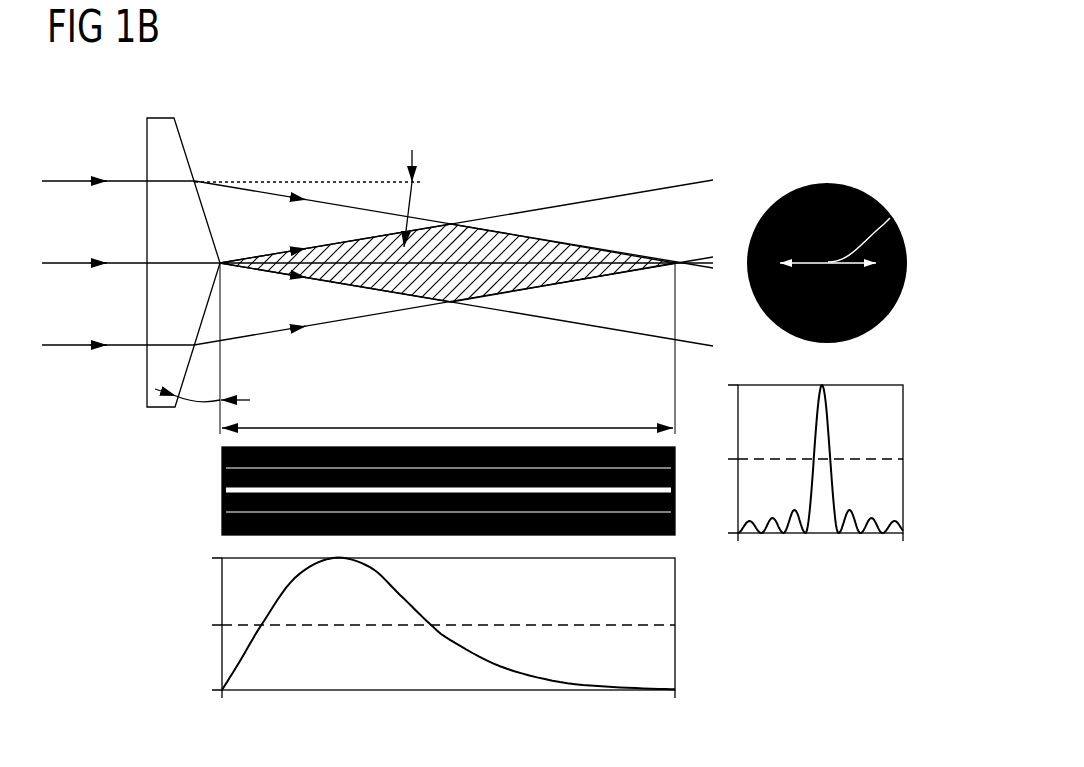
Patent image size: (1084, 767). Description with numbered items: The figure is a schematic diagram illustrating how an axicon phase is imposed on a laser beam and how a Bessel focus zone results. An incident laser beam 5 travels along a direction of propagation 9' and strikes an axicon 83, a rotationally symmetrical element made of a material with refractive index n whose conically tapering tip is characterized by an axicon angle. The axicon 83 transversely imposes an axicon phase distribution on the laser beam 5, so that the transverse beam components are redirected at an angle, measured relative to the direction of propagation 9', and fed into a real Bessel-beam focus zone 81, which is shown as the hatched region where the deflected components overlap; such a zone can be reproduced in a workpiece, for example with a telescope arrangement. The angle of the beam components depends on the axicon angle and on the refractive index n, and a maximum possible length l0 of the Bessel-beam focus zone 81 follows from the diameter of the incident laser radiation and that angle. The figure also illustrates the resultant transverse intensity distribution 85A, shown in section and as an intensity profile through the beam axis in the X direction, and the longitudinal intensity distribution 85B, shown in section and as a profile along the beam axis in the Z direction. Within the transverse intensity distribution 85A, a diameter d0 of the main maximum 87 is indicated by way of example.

The laser beam 5 is at (78, 168).
The axicon 83 is at (160, 409).
The direction of propagation 9' is at (307, 150).
The Bessel-beam focus zone 81 is at (495, 247).
The maximum possible length l0 is at (447, 427).
The longitudinal intensity distribution 85B is at (688, 663).
The transverse intensity distribution 85A is at (893, 368).
The diameter d0 is at (888, 220).
The main maximum 87 is at (806, 437).